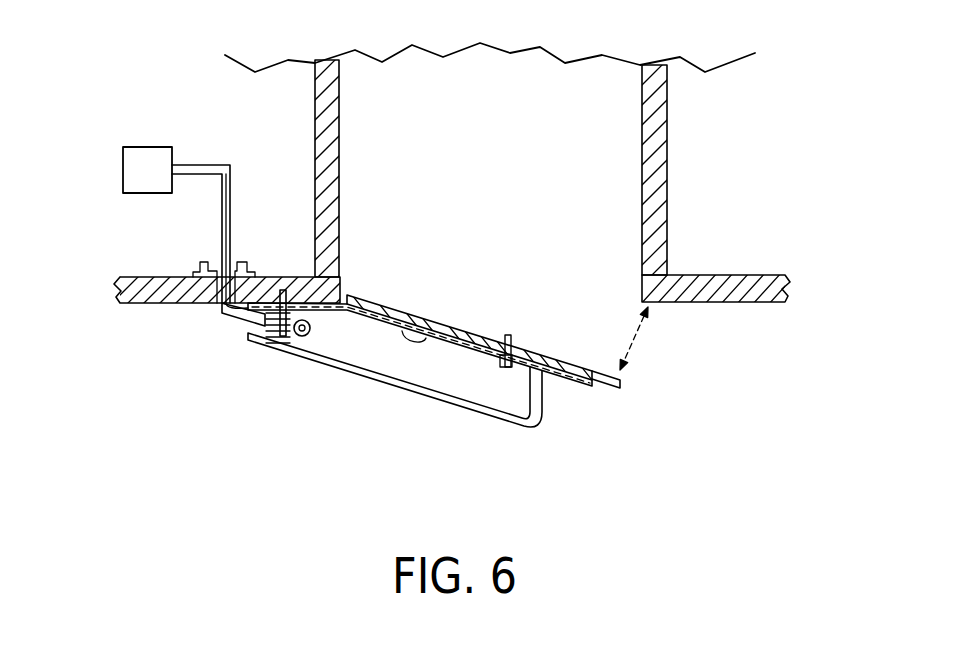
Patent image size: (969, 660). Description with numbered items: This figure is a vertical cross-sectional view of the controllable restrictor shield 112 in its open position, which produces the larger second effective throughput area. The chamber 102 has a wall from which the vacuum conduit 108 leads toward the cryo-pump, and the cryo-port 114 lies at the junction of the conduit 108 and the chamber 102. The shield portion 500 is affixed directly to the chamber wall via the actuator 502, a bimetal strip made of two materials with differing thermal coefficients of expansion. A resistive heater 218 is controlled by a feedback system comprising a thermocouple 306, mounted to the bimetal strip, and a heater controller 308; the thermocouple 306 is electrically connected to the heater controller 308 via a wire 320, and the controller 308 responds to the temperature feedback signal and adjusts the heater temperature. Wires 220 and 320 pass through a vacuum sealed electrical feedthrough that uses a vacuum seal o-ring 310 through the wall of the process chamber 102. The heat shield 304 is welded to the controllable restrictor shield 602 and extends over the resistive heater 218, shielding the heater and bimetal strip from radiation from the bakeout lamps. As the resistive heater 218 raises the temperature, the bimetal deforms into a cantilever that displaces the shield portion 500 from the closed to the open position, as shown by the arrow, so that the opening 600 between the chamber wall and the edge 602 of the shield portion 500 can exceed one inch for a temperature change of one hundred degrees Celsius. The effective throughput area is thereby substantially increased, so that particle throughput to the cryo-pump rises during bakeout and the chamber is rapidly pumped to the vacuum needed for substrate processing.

The chamber 102 is at (773, 302).
The vacuum conduit 108 is at (667, 180).
The controllable restrictor shield 112 is at (583, 410).
The cryo-port 114 is at (400, 230).
The resistive heater 218 is at (302, 337).
The wire 220 is at (187, 175).
The heat shield 304 is at (520, 421).
The thermocouple 306 is at (428, 330).
The heater controller 308 is at (138, 178).
The vacuum seal o-ring 310 is at (225, 322).
The wire 320 is at (193, 165).
The shield portion 500 is at (586, 364).
The actuator 502 is at (483, 338).
The opening 600 is at (634, 338).
The edge 602 is at (621, 388).